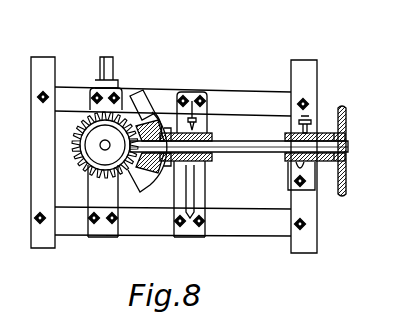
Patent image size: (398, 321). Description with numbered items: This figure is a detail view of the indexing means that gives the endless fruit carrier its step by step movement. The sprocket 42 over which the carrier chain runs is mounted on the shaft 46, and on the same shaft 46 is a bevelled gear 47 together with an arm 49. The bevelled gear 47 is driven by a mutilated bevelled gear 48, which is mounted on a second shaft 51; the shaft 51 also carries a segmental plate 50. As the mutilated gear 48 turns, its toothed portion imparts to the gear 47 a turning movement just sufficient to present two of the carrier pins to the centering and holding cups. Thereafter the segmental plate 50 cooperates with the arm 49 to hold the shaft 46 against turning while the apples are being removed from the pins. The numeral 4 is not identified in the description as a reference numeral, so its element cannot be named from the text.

The frame post 4 is at (14, 110).
The sprocket 42 is at (349, 118).
The shaft 46 is at (243, 146).
The bevelled gear 47 is at (152, 128).
The mutilated bevelled gear 48 is at (85, 110).
The arm 49 is at (180, 108).
The segmental plate 50 is at (137, 100).
The shaft 51 is at (100, 143).